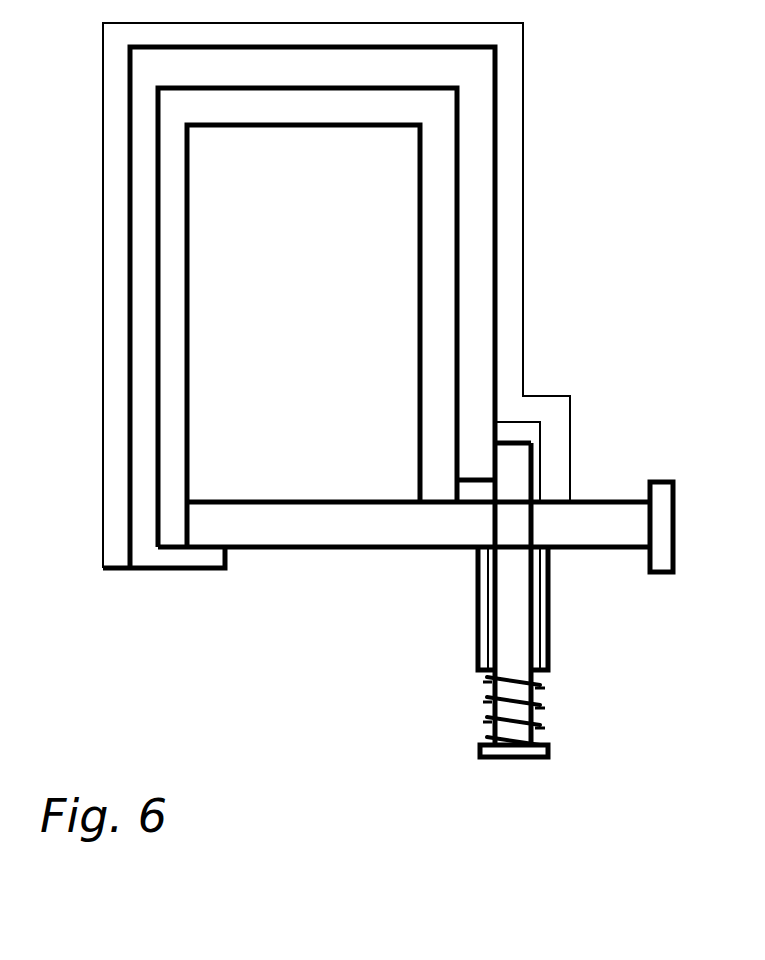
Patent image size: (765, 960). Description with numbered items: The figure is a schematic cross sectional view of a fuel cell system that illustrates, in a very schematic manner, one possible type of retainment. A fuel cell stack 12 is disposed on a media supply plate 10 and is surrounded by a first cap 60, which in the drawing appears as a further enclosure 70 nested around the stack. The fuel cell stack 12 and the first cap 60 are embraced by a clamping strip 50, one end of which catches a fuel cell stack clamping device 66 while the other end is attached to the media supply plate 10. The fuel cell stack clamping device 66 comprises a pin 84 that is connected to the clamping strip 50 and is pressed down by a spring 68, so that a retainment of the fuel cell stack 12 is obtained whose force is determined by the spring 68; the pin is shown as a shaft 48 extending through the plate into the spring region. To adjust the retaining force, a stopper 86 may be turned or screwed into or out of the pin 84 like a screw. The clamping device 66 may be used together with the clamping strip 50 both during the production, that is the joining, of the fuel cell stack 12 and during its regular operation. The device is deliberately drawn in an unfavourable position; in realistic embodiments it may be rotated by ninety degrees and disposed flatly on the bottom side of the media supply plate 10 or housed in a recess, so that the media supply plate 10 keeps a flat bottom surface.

The media supply plate 10 is at (283, 533).
The fuel cell stack 12 is at (310, 320).
The shaft / pin 48 is at (533, 523).
The clamping strip 50 is at (473, 462).
The first cap 60 is at (440, 230).
The fuel cell stack clamping device 66 is at (413, 663).
The spring 68 is at (535, 708).
The outer housing 70 is at (510, 152).
The pin 84 is at (515, 613).
The stopper 86 is at (523, 757).